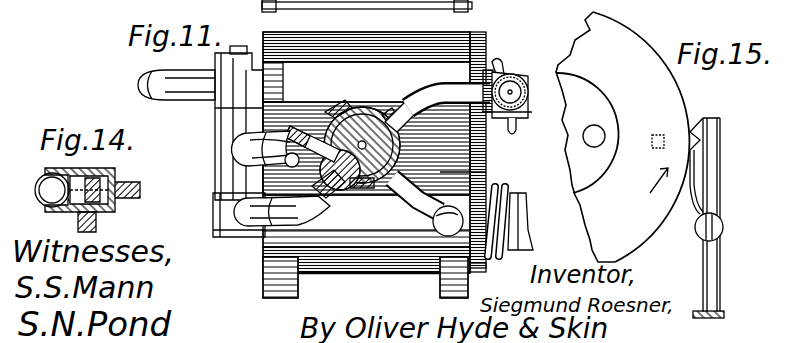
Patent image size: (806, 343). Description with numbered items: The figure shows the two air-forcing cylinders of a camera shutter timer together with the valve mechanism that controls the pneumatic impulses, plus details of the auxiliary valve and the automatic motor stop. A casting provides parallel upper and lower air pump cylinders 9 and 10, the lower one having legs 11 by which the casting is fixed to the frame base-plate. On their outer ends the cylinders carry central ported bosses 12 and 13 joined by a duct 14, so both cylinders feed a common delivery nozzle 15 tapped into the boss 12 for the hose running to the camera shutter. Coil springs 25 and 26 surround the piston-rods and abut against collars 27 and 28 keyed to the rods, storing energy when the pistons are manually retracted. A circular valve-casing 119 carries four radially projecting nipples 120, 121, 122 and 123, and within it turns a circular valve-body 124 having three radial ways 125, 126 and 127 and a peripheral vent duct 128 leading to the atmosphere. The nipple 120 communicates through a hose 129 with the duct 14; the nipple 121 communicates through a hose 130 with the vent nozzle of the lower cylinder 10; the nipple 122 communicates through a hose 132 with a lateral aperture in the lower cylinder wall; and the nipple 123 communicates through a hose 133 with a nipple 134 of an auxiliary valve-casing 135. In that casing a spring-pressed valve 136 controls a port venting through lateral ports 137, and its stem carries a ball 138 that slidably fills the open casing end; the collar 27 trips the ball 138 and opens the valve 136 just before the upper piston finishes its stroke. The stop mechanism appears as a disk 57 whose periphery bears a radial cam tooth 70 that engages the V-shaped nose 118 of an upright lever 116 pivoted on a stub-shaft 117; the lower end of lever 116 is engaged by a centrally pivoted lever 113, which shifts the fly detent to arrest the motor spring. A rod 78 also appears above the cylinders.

In FIG. 11, the upper air pump cylinder 9 is at (412, 55).
In FIG. 11, the lower air pump cylinder 10 is at (380, 258).
In FIG. 11, the legs 11 is at (268, 283).
In FIG. 11, the central ported boss 12 is at (252, 68).
In FIG. 11, the central ported boss 13 is at (243, 237).
In FIG. 11, the duct 14 is at (225, 125).
In FIG. 11, the delivery nozzle 15 is at (190, 72).
In FIG. 11, the coil spring 25 is at (524, 108).
In FIG. 11, the coil spring 26 is at (528, 222).
In FIG. 11, the collar 27 is at (505, 136).
In FIG. 11, the collar 28 is at (486, 268).
In FIG. 15, the disk 57 is at (643, 47).
In FIG. 15, the cam tooth 70 is at (688, 202).
In FIG. 11, the rod 78 is at (470, 9).
In FIG. 15, the lever 113 is at (720, 311).
In FIG. 15, the upright lever 116 is at (716, 264).
In FIG. 15, the stub-shaft 117 is at (718, 220).
In FIG. 15, the V-shaped nose 118 is at (696, 128).
In FIG. 11, the valve-casing 119 is at (355, 107).
In FIG. 11, the nipple 120 is at (300, 128).
In FIG. 11, the nipple 121 is at (338, 190).
In FIG. 11, the nipple 122 is at (410, 198).
In FIG. 11, the nipple 123 is at (404, 107).
In FIG. 11, the valve-body 124 is at (338, 113).
In FIG. 11, the radial way 125 is at (333, 138).
In FIG. 11, the radial way 126 is at (362, 188).
In FIG. 11, the radial way 127 is at (386, 115).
In FIG. 11, the duct 128 is at (435, 210).
In FIG. 11, the hose 129 is at (232, 152).
In FIG. 11, the hose 130 is at (282, 212).
In FIG. 11, the hose 132 is at (462, 205).
In FIG. 11, the hose 133 is at (448, 84).
In FIG. 11, the nipple 134 is at (500, 66).
In FIG. 14, the nipple 134 is at (96, 226).
In FIG. 11, the auxiliary valve-casing 135 is at (522, 78).
In FIG. 14, the auxiliary valve-casing 135 is at (108, 185).
In FIG. 14, the spring-pressed valve 136 is at (95, 178).
In FIG. 14, the lateral ports 137 is at (48, 168).
In FIG. 14, the ball 138 is at (36, 192).